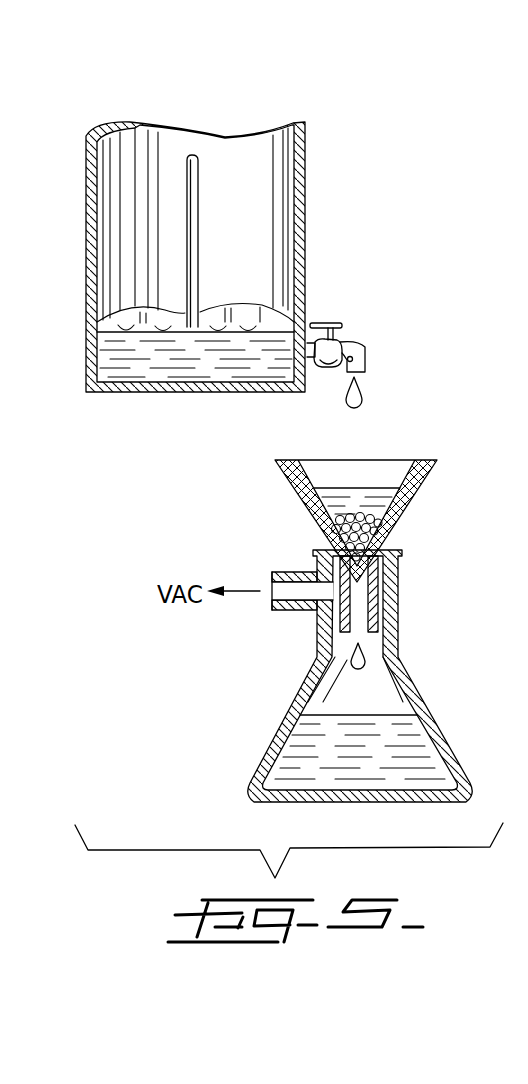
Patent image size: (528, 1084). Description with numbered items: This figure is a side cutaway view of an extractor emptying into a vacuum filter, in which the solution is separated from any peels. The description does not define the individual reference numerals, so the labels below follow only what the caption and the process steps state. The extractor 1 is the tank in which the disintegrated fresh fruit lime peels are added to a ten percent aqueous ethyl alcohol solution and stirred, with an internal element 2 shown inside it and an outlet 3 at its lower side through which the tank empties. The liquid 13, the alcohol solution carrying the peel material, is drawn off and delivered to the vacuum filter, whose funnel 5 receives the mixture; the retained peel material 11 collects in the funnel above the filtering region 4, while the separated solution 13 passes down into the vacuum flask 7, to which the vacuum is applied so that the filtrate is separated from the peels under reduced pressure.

The container 1 is at (306, 190).
The tube 2 is at (198, 178).
The faucet 3 is at (354, 342).
The filtrate liquid 4 is at (393, 526).
The funnel 5 is at (405, 463).
The flask 7 is at (398, 622).
The granular material 11 is at (350, 520).
The liquid 13 is at (268, 344).